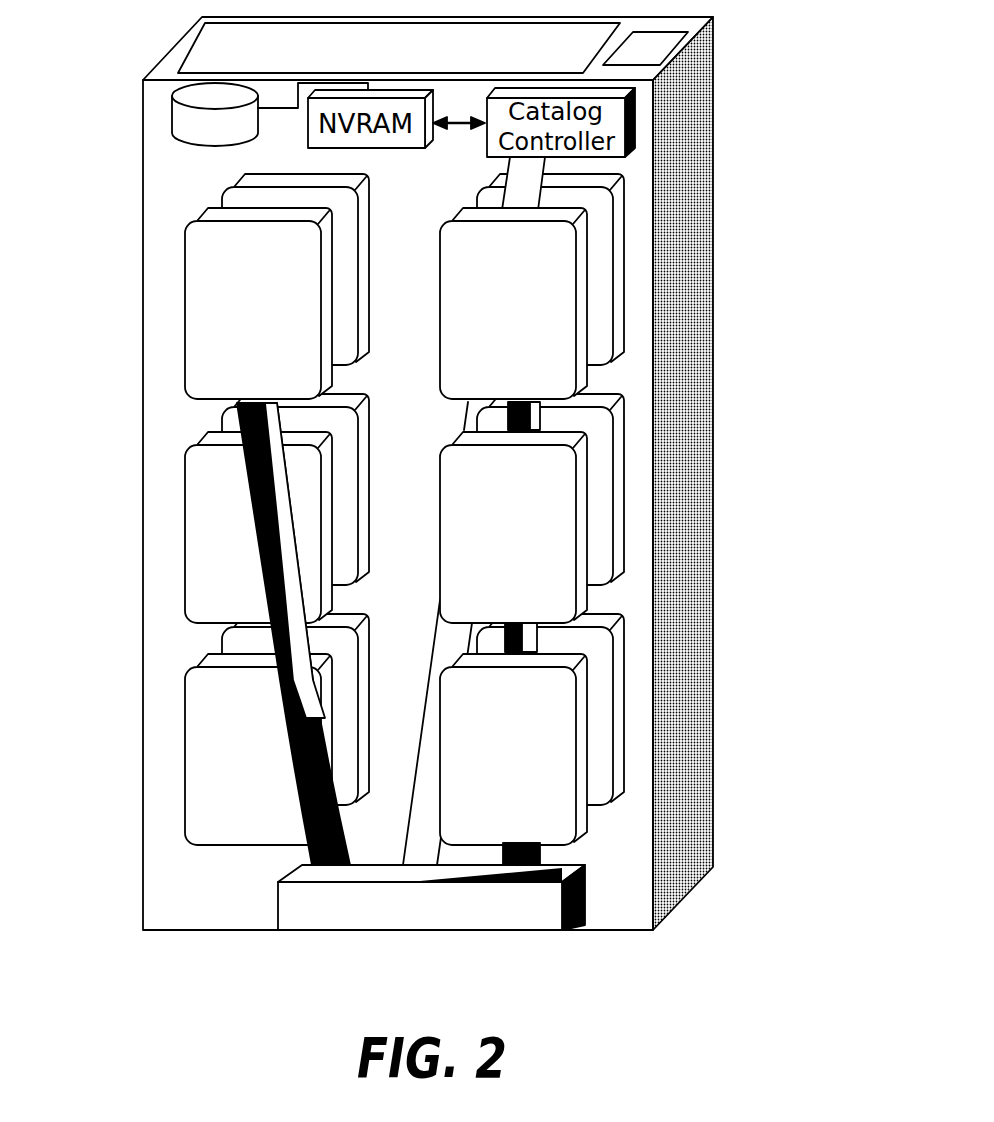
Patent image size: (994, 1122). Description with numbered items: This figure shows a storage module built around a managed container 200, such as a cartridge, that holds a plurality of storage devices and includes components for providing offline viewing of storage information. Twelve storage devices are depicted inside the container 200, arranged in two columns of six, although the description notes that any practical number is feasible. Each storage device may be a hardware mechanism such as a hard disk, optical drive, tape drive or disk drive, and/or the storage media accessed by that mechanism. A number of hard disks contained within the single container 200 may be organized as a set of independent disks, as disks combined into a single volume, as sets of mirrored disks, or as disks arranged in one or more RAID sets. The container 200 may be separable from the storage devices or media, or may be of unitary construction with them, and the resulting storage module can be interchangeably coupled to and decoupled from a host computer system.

The managed container 200 is at (697, 130).